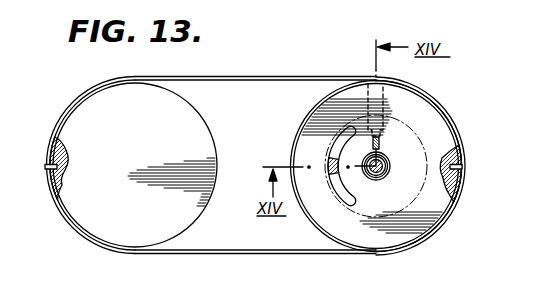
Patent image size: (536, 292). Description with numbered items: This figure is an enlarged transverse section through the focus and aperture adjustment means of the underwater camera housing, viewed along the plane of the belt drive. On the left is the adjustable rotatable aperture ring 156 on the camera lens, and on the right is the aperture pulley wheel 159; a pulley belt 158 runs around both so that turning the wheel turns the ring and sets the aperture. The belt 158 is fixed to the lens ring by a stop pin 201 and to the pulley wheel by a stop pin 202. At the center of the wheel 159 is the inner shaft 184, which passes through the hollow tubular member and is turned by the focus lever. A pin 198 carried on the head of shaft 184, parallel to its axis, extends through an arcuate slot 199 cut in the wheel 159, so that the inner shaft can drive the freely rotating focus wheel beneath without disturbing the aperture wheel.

The pulley belt 158 is at (222, 77).
The aperture ring 156 is at (177, 132).
The stop pin 201 is at (47, 167).
The aperture pulley wheel 159 is at (432, 122).
The stop pin 202 is at (462, 167).
The arcuate slot 199 is at (338, 140).
The pin 198 is at (325, 163).
The inner shaft 184 is at (379, 178).